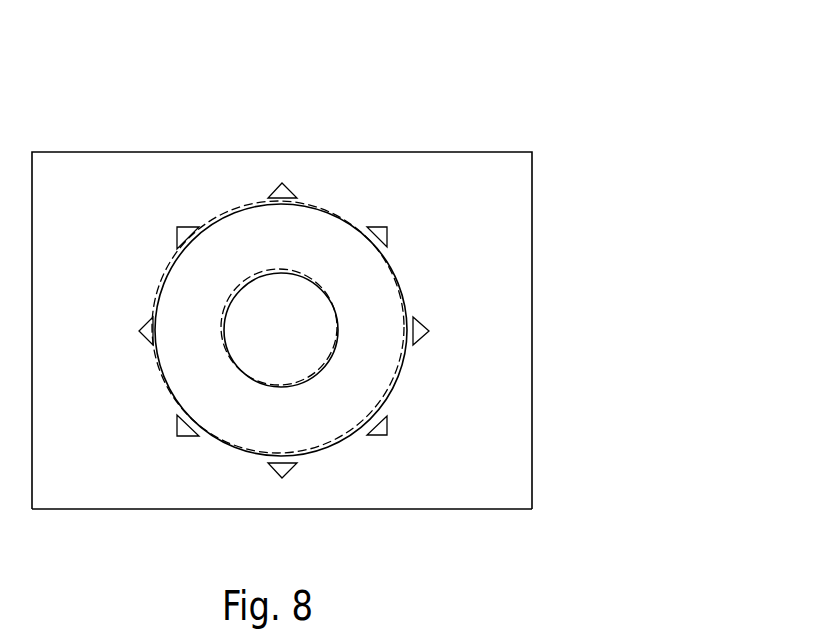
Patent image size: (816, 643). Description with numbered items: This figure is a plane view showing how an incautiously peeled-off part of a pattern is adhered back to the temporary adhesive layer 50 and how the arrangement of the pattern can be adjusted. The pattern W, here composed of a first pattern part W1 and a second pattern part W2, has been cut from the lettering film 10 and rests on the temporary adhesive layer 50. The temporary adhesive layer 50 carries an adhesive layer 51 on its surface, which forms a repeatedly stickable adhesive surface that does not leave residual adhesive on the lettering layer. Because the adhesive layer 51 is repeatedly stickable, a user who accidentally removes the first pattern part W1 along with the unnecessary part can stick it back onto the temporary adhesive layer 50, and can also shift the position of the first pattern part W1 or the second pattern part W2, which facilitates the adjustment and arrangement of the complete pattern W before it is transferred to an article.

The lettering film 10 is at (574, 170).
The temporary adhesive layer 50 is at (545, 319).
The adhesive layer 51 is at (508, 403).
The pattern W is at (361, 199).
The first pattern part W1 is at (165, 268).
The second pattern part W2 is at (290, 196).